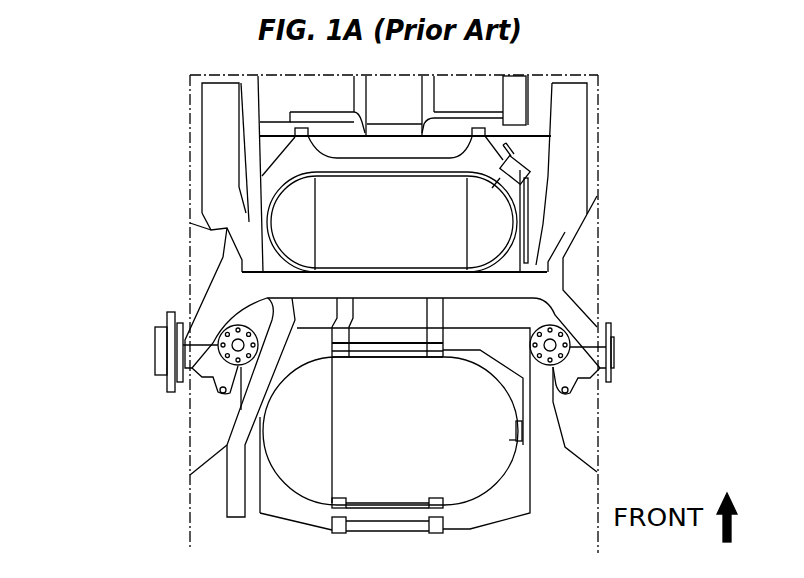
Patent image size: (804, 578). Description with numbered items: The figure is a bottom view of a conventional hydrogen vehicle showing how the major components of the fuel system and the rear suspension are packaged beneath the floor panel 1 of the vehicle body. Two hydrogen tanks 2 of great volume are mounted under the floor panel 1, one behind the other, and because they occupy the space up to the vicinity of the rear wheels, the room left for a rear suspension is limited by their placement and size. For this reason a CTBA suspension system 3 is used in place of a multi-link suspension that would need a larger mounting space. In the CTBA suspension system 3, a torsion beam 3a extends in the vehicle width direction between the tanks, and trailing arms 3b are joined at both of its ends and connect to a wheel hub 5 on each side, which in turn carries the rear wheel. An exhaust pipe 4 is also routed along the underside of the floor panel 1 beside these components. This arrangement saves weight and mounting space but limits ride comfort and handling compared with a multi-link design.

The floor panel 1 is at (538, 126).
The hydrogen tank 2 is at (460, 412).
The CTBA suspension system 3 is at (316, 371).
The torsion beam 3a is at (284, 282).
The trailing arm 3b is at (222, 307).
The exhaust pipe 4 is at (252, 163).
The wheel hub 5 is at (170, 350).